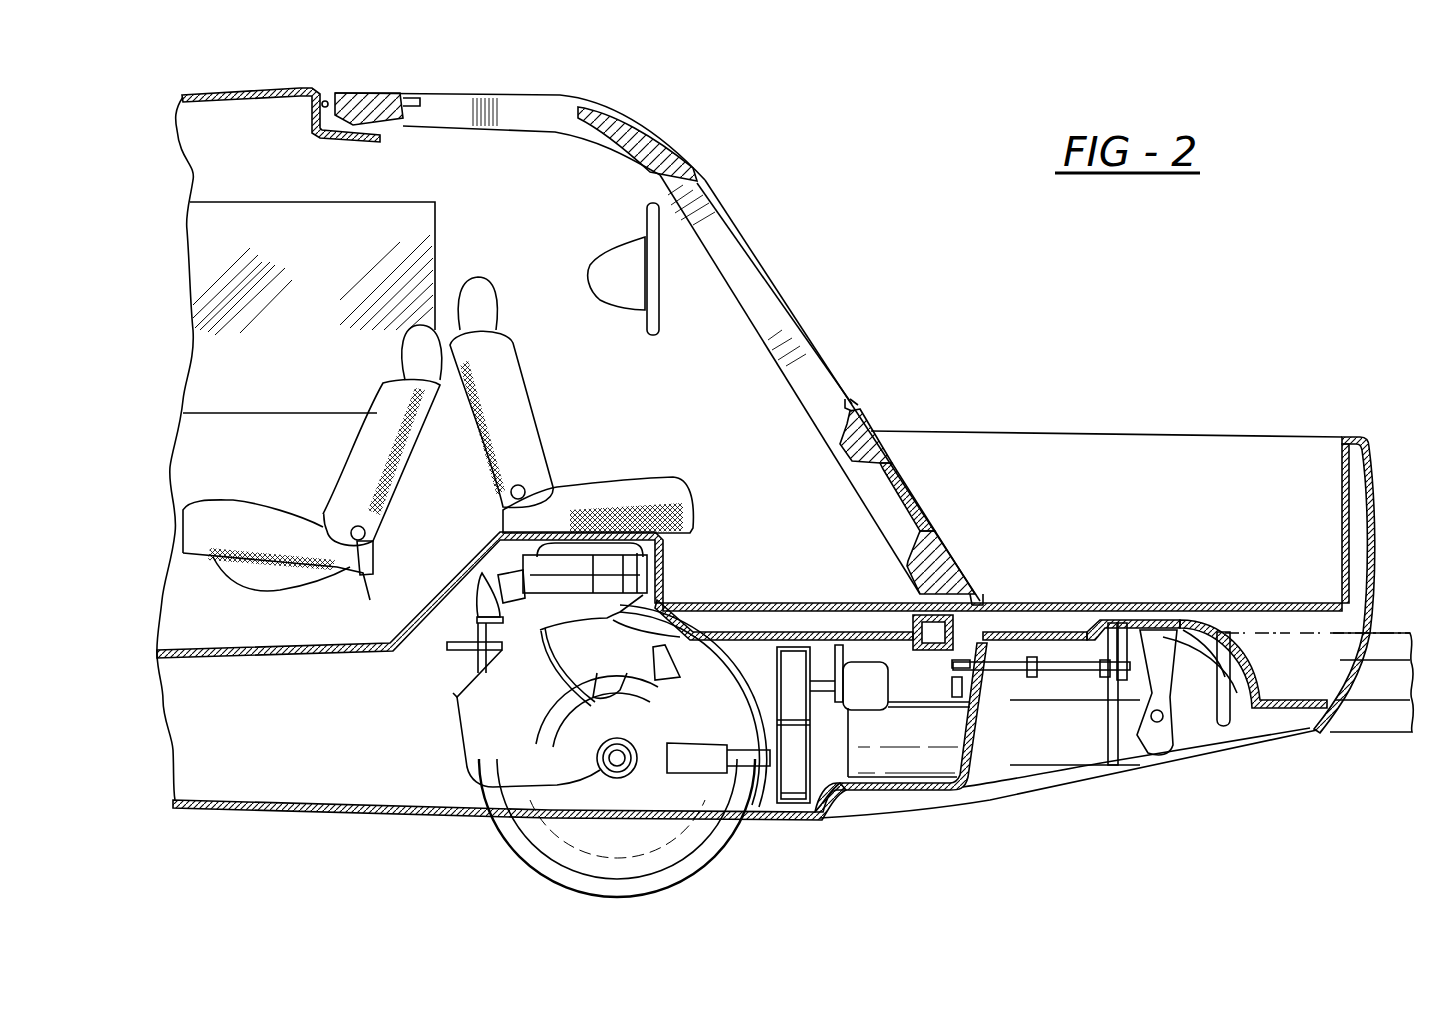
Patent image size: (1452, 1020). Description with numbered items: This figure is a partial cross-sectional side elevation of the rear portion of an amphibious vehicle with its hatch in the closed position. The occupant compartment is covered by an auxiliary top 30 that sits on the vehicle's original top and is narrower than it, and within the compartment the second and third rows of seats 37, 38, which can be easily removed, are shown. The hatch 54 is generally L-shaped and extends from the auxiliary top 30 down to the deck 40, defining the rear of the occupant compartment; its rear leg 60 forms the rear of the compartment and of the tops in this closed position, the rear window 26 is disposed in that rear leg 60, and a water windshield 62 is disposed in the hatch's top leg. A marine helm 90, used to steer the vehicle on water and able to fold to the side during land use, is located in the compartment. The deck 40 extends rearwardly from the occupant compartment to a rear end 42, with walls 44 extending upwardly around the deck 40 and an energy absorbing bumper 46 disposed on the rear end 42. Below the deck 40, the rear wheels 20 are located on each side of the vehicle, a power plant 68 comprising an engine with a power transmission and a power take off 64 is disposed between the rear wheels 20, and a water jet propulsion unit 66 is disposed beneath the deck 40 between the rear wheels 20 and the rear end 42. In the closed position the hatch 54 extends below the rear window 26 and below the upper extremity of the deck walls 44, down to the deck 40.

The rear wheels 20 is at (515, 828).
The rear window 26 is at (812, 325).
The auxiliary top 30 is at (315, 94).
The second row of seats 37 is at (350, 466).
The third row of seats 38 is at (535, 432).
The deck 40 is at (1080, 608).
The rear end 42 is at (1372, 496).
The walls 44 is at (1297, 450).
The energy absorbing bumper 46 is at (1353, 720).
The hatch 54 is at (698, 150).
The rear leg 60 is at (920, 495).
The water windshield 62 is at (570, 96).
The power take off 64 is at (735, 775).
The water jet propulsion unit 66 is at (1047, 753).
The power plant 68 is at (472, 762).
The marine helm 90 is at (657, 268).